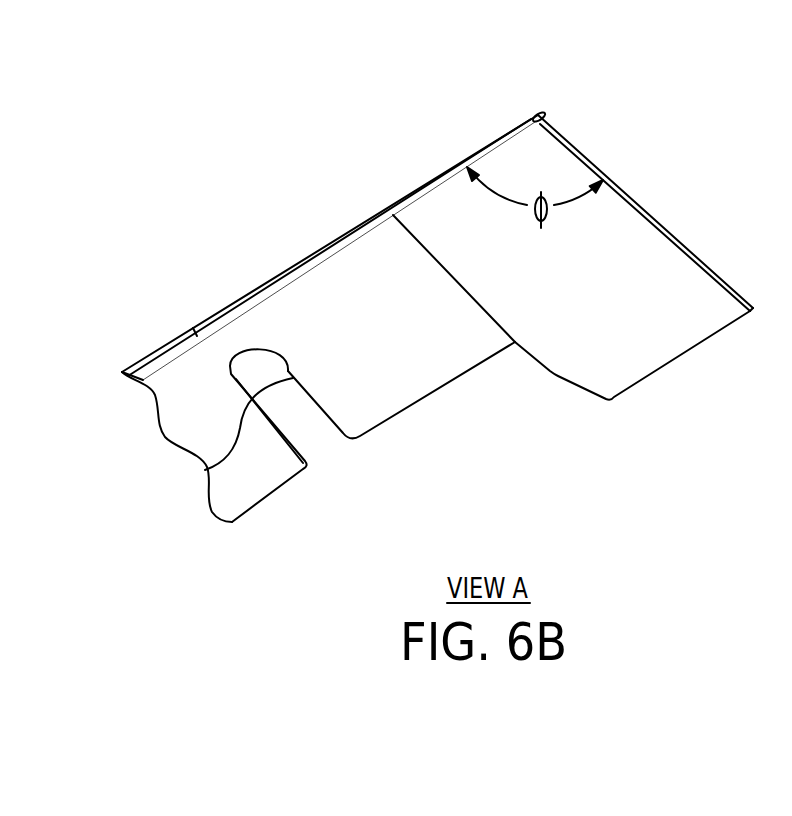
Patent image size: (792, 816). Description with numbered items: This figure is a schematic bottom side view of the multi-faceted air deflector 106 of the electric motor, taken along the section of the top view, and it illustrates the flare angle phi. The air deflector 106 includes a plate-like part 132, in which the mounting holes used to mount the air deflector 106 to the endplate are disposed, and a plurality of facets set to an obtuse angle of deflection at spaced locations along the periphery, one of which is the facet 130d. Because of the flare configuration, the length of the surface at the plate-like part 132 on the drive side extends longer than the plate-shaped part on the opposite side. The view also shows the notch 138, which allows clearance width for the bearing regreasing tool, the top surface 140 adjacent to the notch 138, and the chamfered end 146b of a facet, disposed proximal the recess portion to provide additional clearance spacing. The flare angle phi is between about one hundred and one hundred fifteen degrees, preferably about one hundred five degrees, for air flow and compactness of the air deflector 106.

The air deflector 106 is at (449, 206).
The plate-like part 132 is at (272, 277).
The facet 130d is at (698, 253).
The notch 138 is at (205, 470).
The top surface 140 is at (358, 382).
The chamfered end 146b is at (593, 397).